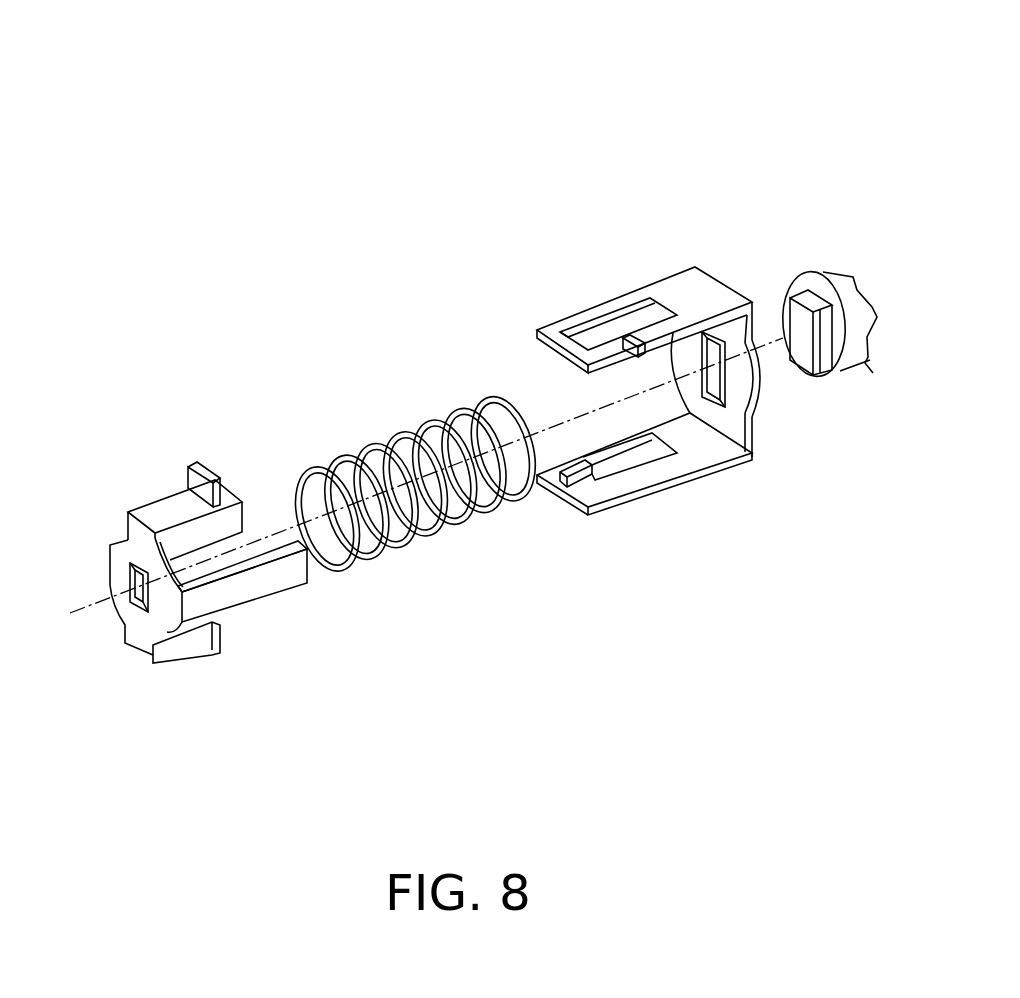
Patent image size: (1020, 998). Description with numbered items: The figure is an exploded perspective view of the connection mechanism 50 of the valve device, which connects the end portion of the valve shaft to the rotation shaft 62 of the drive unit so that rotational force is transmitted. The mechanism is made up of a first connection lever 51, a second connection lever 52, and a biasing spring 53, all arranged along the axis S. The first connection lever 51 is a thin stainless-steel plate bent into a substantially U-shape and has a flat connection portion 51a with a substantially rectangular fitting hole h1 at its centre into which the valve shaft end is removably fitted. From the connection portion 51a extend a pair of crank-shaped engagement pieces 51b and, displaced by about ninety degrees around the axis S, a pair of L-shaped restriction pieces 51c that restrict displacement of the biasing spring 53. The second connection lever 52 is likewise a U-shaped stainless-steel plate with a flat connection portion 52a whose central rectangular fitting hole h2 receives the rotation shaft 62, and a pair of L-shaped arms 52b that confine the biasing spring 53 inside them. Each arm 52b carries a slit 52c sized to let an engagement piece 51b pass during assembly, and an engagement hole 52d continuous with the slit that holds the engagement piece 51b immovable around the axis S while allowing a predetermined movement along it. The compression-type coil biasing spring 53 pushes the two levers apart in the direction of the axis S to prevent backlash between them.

The connection mechanism 50 is at (465, 198).
The first connection lever 51 is at (165, 490).
The connection portion 51a is at (106, 608).
The engagement pieces 51b is at (205, 470).
The restriction pieces 51c is at (244, 518).
The second connection lever 52 is at (657, 277).
The connection portion 52a is at (757, 387).
The arms 52b is at (685, 268).
The slits 52c is at (623, 338).
The engagement holes 52d is at (607, 320).
The biasing spring 53 is at (430, 398).
The rotation shaft 62 is at (827, 277).
The fitting hole h1 is at (130, 603).
The fitting hole h2 is at (712, 410).
The axis S is at (540, 415).